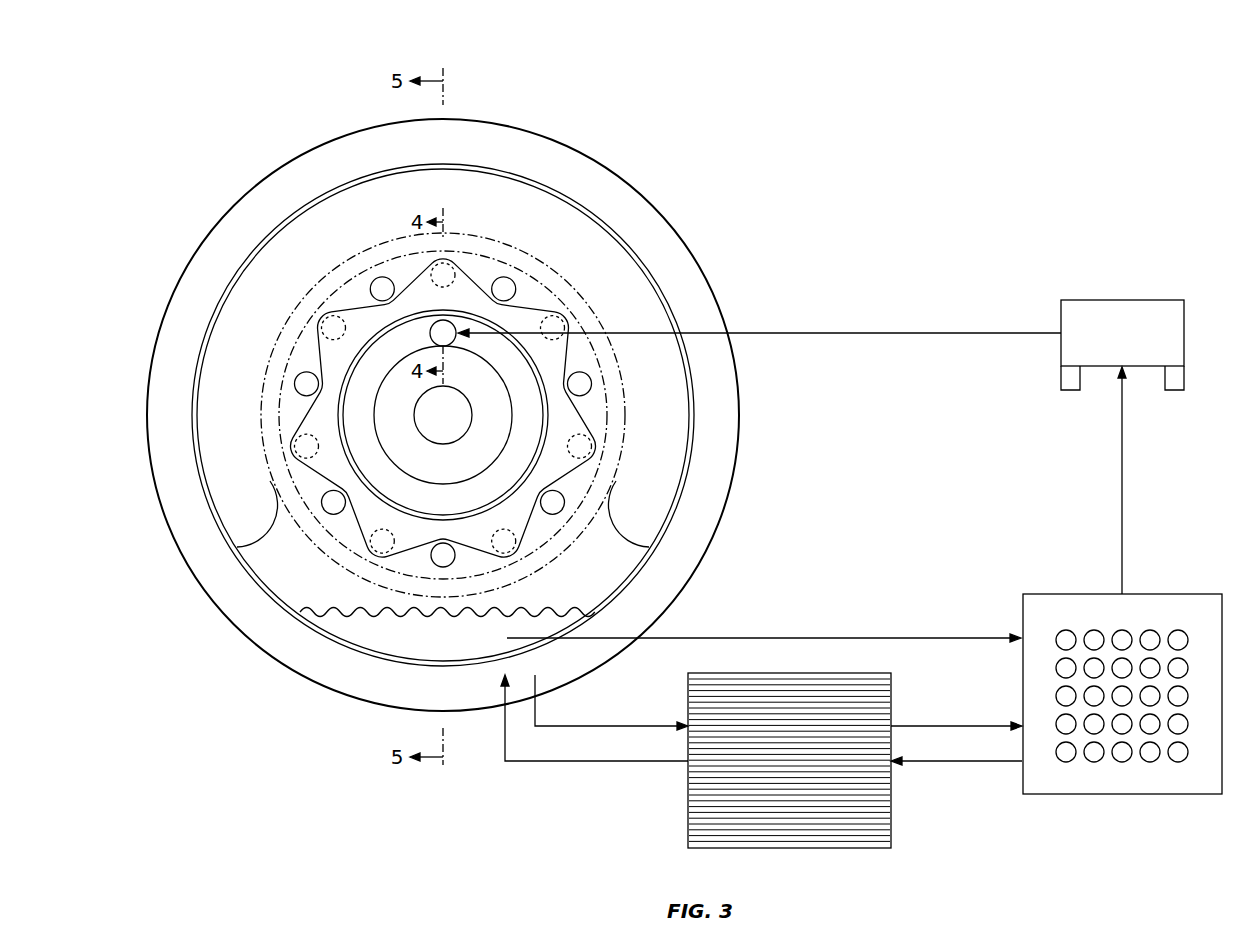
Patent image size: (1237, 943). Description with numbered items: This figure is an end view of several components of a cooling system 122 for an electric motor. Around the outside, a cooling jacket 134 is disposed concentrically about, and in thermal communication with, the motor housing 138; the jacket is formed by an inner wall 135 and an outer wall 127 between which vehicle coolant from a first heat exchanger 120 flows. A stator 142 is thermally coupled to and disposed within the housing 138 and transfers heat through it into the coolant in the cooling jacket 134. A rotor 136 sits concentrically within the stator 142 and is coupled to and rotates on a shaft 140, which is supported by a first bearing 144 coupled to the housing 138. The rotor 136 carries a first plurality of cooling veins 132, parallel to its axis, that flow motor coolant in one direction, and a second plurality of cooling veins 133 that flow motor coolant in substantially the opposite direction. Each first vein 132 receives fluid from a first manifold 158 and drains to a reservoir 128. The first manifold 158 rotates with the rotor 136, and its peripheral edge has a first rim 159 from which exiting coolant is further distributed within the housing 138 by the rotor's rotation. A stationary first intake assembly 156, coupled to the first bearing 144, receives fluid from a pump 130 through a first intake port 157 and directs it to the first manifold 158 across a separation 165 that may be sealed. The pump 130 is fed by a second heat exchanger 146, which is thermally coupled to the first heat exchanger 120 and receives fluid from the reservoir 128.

The first heat exchanger 120 is at (687, 820).
The cooling system 122 is at (988, 164).
The outer wall 127 is at (257, 647).
The reservoir 128 is at (425, 657).
The pump 130 is at (1104, 344).
The first plurality of cooling veins 132 is at (428, 272).
The second plurality of cooling veins 133 is at (377, 278).
The cooling jacket 134 is at (425, 702).
The inner wall 135 is at (247, 573).
The rotor 136 is at (293, 447).
The housing 138 is at (678, 460).
The shaft 140 is at (425, 427).
The stator 142 is at (425, 204).
The first bearing 144 is at (425, 474).
The second heat exchanger 146 is at (1182, 596).
The first intake assembly 156 is at (425, 509).
The first intake port 157 is at (540, 353).
The first manifold 158 is at (330, 353).
The first rim 159 is at (353, 300).
The separation 165 is at (546, 425).